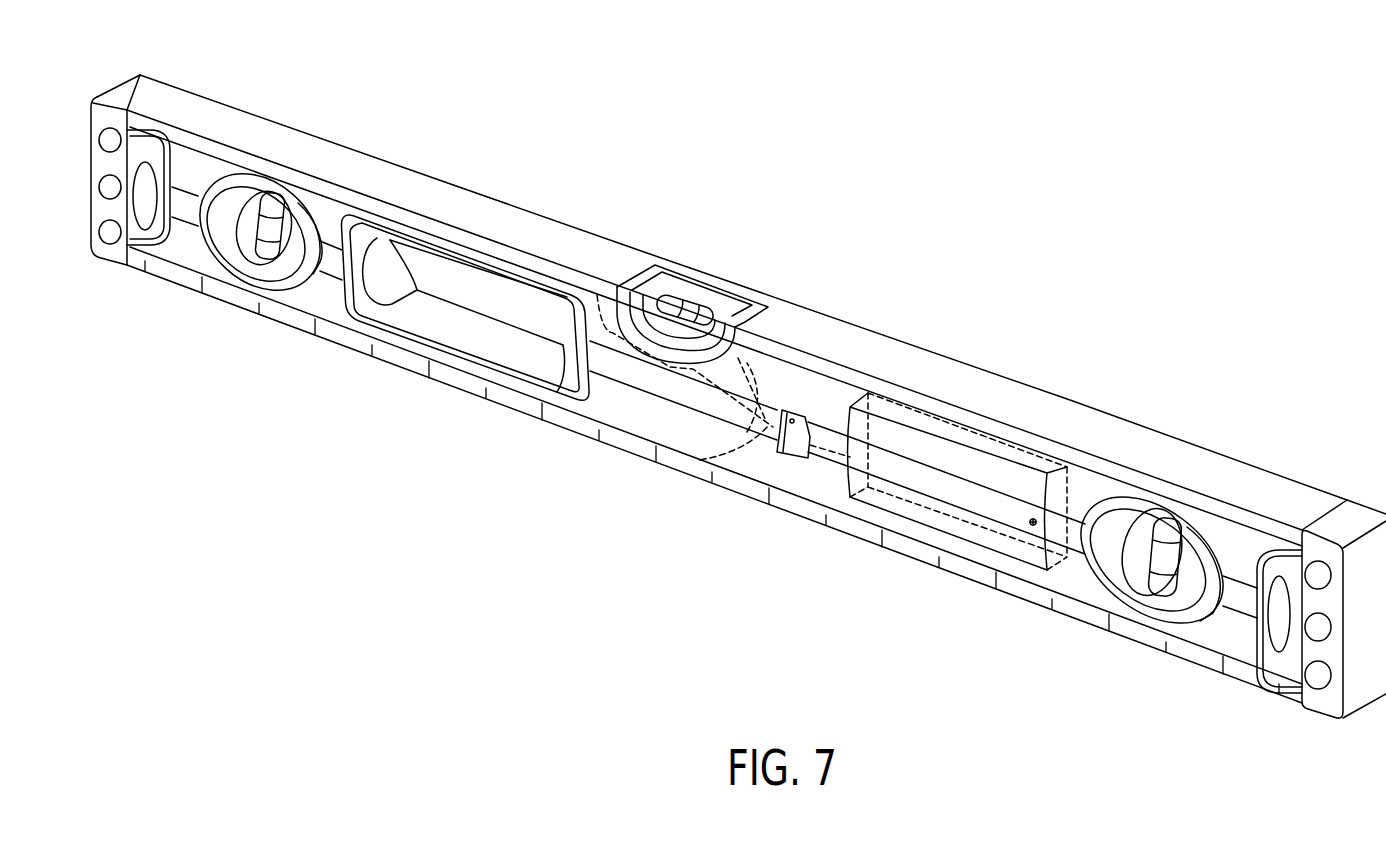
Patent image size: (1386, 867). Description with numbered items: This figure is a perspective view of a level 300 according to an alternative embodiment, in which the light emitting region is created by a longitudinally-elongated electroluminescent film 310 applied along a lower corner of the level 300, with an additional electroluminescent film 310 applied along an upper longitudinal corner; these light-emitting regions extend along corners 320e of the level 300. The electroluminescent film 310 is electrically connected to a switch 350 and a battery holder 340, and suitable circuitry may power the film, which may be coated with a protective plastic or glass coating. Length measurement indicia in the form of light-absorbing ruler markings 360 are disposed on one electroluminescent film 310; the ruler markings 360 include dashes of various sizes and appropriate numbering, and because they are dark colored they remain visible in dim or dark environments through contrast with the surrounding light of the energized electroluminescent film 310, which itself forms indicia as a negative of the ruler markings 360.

The level 300 is at (802, 262).
The electroluminescent film 310 is at (300, 180).
The corner 320e is at (978, 595).
The battery holder 340 is at (988, 442).
The switch 350 is at (796, 410).
The ruler markings 360 is at (543, 417).